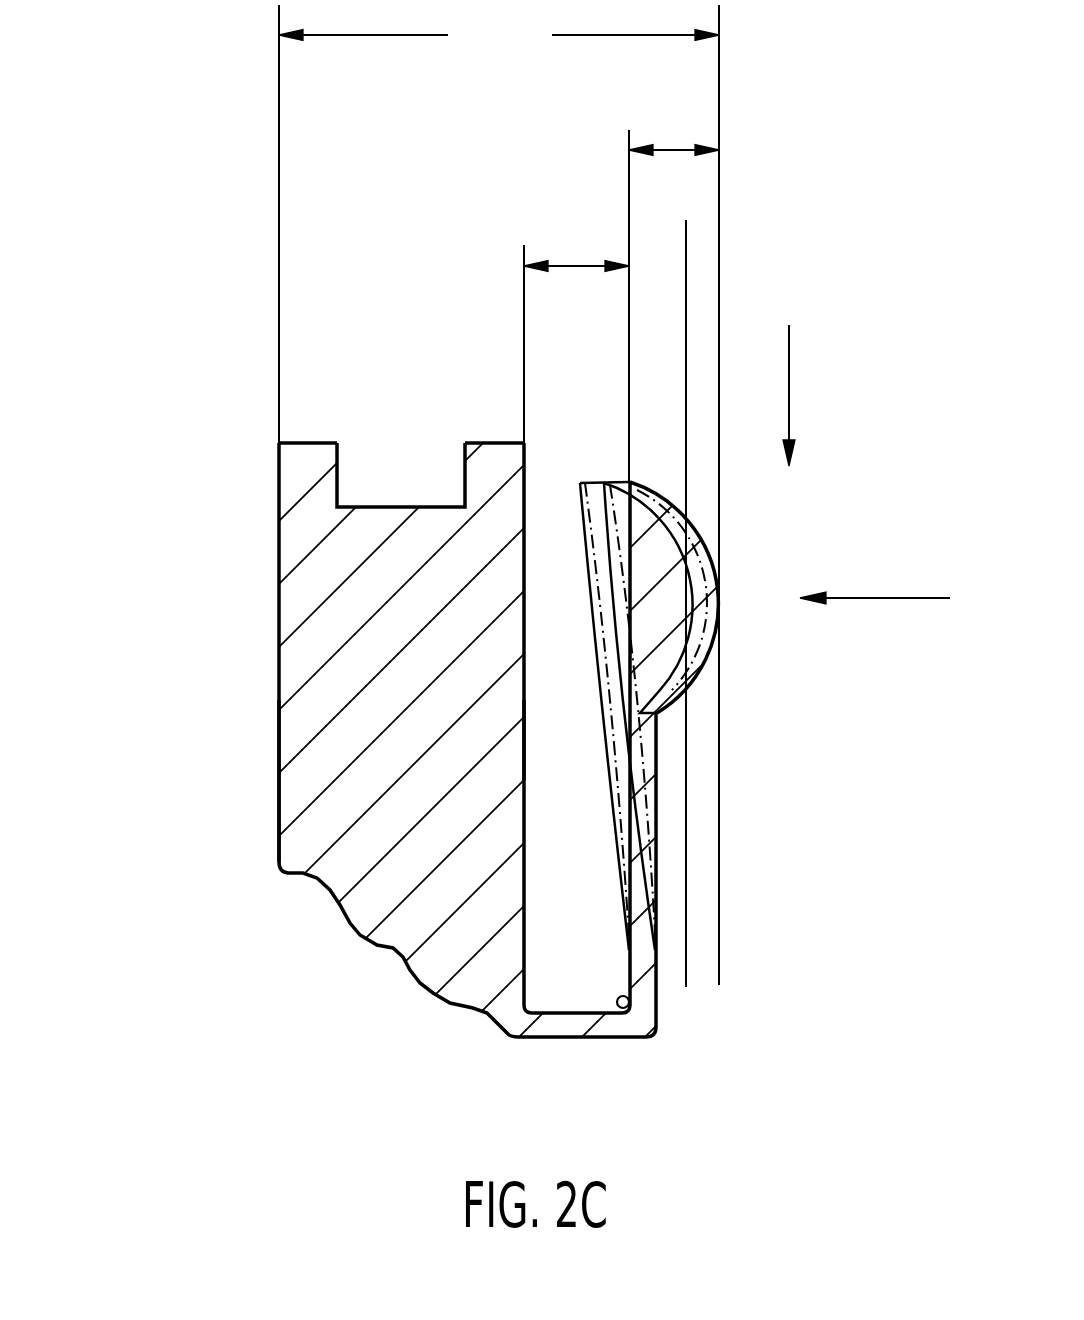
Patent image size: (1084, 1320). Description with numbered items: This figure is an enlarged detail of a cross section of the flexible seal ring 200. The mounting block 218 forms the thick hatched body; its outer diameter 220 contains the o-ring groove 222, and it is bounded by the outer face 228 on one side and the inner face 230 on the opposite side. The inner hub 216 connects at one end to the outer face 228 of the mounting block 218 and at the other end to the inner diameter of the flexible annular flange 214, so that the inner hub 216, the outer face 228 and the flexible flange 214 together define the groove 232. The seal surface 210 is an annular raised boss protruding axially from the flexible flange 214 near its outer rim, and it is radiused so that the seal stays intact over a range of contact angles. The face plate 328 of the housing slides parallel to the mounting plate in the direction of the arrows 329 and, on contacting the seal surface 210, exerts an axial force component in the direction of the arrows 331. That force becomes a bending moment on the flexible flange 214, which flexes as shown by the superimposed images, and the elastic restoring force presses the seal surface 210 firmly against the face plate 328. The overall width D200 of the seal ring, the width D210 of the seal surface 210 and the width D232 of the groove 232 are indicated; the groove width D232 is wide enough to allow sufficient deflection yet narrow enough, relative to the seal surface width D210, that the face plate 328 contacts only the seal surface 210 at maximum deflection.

The flexible seal ring 200 is at (230, 298).
The seal surface 210 is at (670, 603).
The flexible annular flange 214 is at (638, 878).
The inner hub 216 is at (570, 1028).
The mounting block 218 is at (308, 654).
The outer diameter 220 is at (313, 443).
The o-ring groove 222 is at (465, 507).
The outer face 228 is at (524, 742).
The inner face 230 is at (279, 805).
The groove 232 is at (533, 1012).
The face plate 328 is at (686, 302).
The arrows 329 is at (789, 385).
The arrows 331 is at (895, 598).
The width of flexible seal ring D200 is at (499, 495).
The width of seal surface D210 is at (682, 143).
The width of groove D232 is at (568, 263).